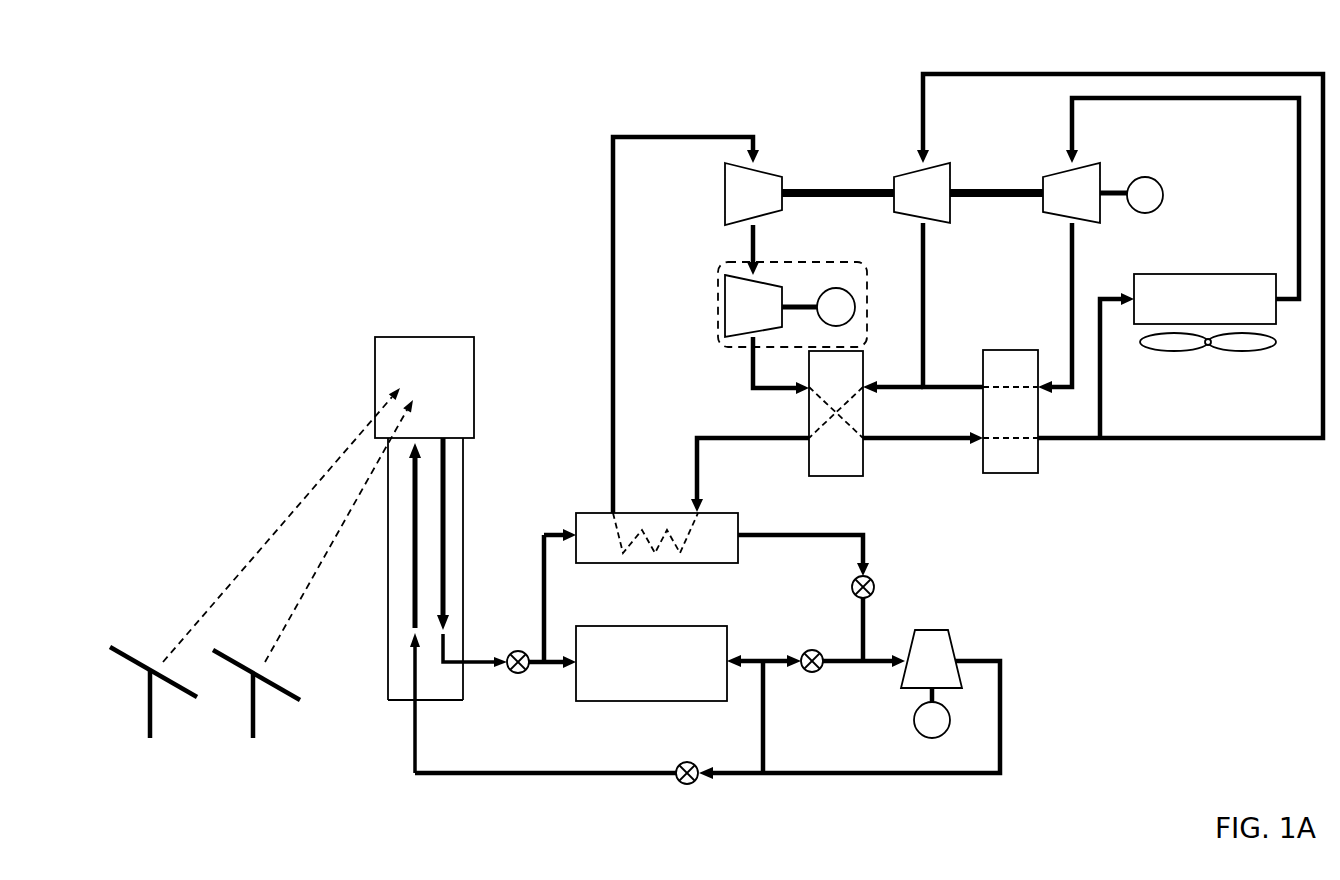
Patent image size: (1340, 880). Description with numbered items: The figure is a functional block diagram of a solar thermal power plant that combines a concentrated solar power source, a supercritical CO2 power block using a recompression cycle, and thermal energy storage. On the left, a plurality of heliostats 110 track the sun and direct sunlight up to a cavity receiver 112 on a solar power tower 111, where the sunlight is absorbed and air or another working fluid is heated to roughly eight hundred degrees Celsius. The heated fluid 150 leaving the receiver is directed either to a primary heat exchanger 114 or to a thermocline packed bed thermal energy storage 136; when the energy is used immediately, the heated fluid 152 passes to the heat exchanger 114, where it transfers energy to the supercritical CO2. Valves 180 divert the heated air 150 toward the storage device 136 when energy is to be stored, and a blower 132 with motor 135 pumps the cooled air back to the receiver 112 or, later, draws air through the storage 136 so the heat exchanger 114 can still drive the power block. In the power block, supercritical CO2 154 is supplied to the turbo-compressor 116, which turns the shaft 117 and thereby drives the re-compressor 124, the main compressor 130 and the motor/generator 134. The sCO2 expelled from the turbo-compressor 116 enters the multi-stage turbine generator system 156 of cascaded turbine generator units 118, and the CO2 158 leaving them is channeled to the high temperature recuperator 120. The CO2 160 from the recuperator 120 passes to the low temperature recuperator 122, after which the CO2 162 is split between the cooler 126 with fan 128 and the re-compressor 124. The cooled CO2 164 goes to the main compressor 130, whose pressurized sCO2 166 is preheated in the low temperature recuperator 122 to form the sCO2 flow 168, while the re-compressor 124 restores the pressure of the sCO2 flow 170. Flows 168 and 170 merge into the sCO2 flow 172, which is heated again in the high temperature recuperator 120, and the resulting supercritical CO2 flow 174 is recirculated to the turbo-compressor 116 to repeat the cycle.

The heliostats 110 is at (153, 712).
The solar power tower 111 is at (388, 628).
The cavity receiver 112 is at (401, 337).
The primary heat exchanger 114 is at (657, 538).
The turbo-compressor 116 is at (723, 188).
The shaft 117 is at (807, 188).
The multi-stage turbine generator system 118 is at (723, 300).
The high temperature recuperator 120 is at (836, 413).
The low temperature recuperator 122 is at (1010, 411).
The re-compressor 124 is at (920, 160).
The cooler 126 is at (1205, 299).
The fan 128 is at (1192, 352).
The main compressor 130 is at (1052, 172).
The blower 132 is at (938, 629).
The motor/generator 134 is at (1158, 175).
The motor 135 is at (913, 717).
The thermal energy storage 136 is at (651, 663).
The heated fluid 150 is at (447, 513).
The heated fluid 152 is at (542, 595).
The supercritical CO2 154 is at (612, 280).
The generator unit 156 is at (757, 257).
The CO2 158 is at (752, 362).
The CO2 160 is at (913, 442).
The CO2 162 is at (1168, 443).
The CO2 164 is at (1297, 195).
The sCO2 166 is at (1067, 275).
The sCO2 flow 168 is at (953, 387).
The sCO2 flow 170 is at (925, 322).
The sCO2 flow 172 is at (905, 385).
The supercritical CO2 flow 174 is at (697, 455).
The valves 180 is at (513, 674).